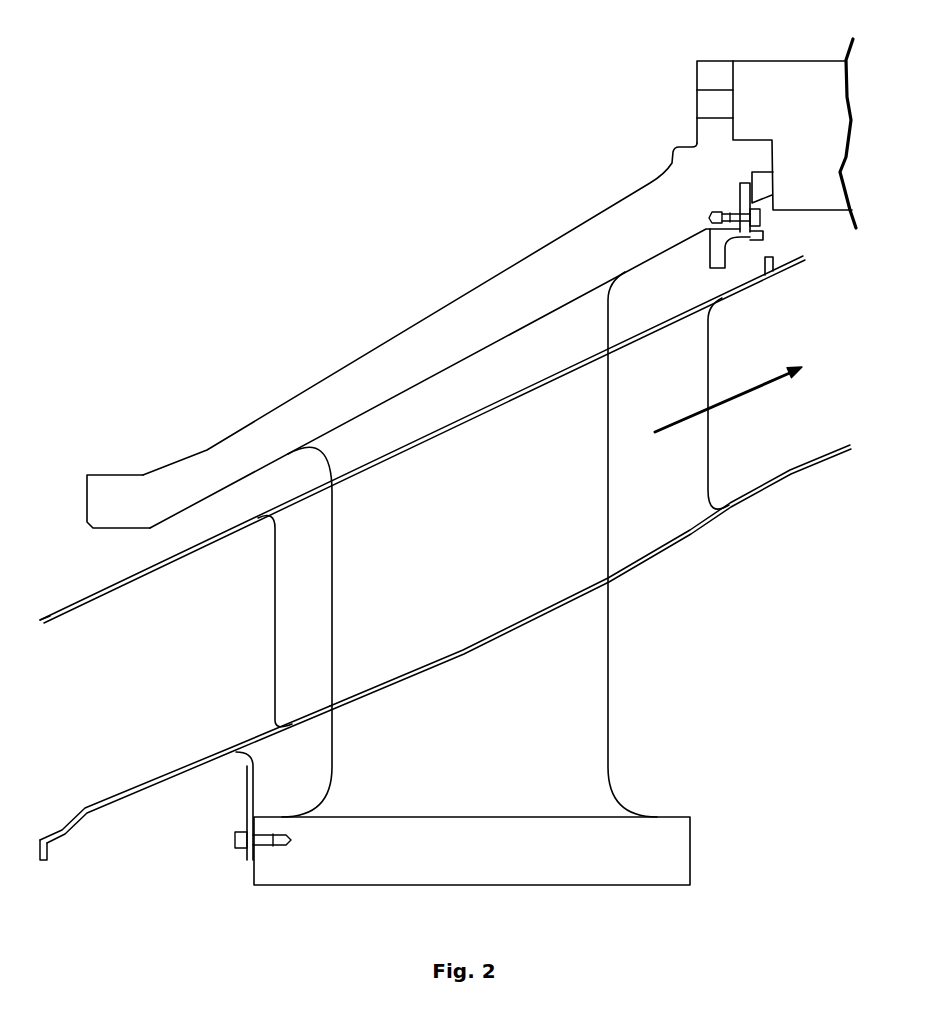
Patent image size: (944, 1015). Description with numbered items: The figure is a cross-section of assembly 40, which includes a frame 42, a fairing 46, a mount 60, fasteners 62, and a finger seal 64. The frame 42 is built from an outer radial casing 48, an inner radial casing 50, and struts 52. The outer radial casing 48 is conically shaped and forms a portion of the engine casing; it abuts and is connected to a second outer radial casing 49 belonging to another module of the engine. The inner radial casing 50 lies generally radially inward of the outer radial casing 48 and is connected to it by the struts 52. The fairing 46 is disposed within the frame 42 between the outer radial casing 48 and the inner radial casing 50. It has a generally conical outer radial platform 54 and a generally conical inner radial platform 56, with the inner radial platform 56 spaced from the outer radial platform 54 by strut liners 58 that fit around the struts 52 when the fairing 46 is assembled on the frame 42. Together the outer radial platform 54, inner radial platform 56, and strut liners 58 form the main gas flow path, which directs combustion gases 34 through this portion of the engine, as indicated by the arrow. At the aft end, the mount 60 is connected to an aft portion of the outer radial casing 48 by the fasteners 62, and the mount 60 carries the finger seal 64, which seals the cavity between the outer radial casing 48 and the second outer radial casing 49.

The combustion gases 34 is at (668, 422).
The assembly 40 is at (227, 208).
The frame 42 is at (430, 252).
The fairing 46 is at (153, 806).
The outer radial casing 48 is at (126, 494).
The second outer radial casing 49 is at (768, 75).
The inner radial casing 50 is at (337, 868).
The struts 52 is at (610, 668).
The outer radial platform 54 is at (772, 270).
The inner radial platform 56 is at (754, 493).
The strut liners 58 is at (711, 448).
The mount 60 is at (750, 237).
The fasteners 62 is at (760, 219).
The finger seal 64 is at (772, 200).